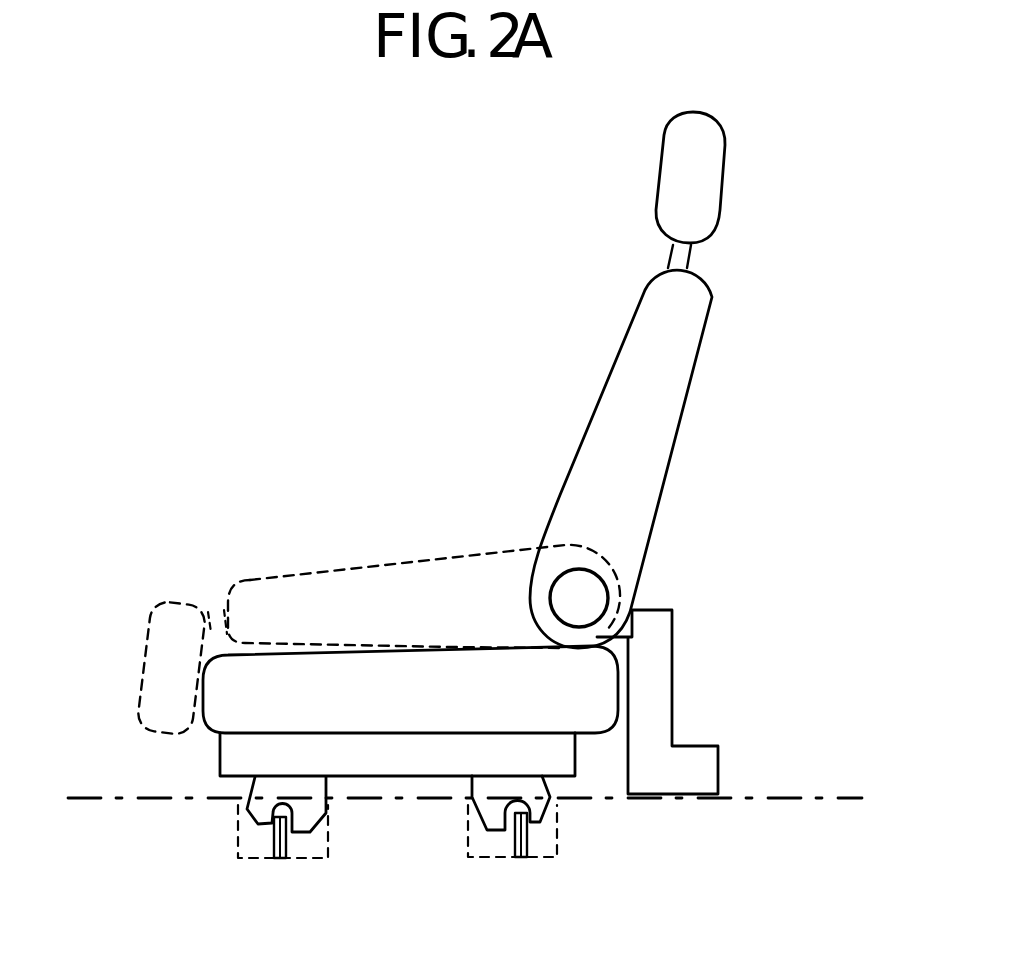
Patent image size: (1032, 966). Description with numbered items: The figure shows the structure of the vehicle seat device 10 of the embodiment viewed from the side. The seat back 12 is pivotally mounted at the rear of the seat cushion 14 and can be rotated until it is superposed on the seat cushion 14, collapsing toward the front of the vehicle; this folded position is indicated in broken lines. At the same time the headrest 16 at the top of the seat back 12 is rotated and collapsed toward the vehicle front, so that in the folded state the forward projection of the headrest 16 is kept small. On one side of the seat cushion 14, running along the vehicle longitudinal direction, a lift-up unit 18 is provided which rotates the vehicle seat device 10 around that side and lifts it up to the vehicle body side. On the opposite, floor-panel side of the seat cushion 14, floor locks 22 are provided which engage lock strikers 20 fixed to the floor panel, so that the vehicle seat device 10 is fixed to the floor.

The vehicle seat device 10 is at (327, 247).
The seat back 12 is at (687, 400).
The seat cushion 14 is at (197, 732).
The headrest 16 is at (722, 180).
The lift-up unit 18 is at (673, 658).
The lock striker 20 is at (267, 861).
The floor lock 22 is at (311, 810).